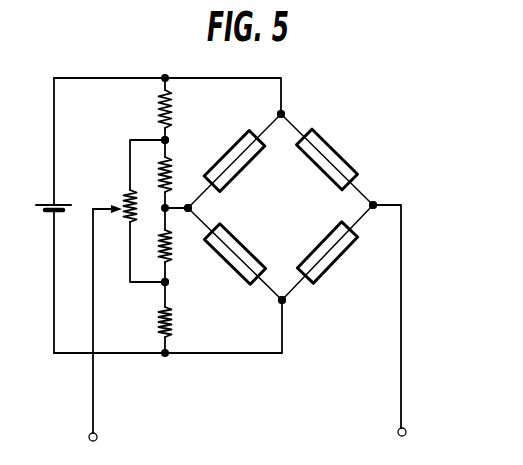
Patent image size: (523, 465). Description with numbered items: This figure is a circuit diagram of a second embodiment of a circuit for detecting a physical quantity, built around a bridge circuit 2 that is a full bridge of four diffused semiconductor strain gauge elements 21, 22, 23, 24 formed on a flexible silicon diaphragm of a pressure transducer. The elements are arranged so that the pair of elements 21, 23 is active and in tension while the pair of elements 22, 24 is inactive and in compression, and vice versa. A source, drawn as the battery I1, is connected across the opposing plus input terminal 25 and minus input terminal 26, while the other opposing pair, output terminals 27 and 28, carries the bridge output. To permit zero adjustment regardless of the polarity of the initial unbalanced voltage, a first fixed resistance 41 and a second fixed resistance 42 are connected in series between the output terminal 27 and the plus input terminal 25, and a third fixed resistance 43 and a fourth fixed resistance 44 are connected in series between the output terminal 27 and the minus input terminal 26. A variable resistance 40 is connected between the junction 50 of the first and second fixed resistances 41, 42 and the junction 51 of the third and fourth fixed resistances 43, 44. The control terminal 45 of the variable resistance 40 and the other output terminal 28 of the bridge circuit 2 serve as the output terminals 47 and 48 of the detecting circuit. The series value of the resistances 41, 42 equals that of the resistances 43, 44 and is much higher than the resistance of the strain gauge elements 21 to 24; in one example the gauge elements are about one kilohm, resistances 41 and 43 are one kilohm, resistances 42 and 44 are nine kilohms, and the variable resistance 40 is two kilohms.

The bridge circuit 2 is at (286, 219).
The strain gauge element 21 is at (242, 127).
The strain gauge element 22 is at (240, 273).
The strain gauge element 23 is at (336, 278).
The strain gauge element 24 is at (332, 164).
The plus input terminal 25 is at (285, 114).
The minus input terminal 26 is at (285, 303).
The output terminal 27 is at (195, 209).
The output terminal 28 is at (374, 205).
The variable resistance 40 is at (126, 193).
The first fixed resistance 41 is at (160, 163).
The second fixed resistance 42 is at (157, 101).
The third fixed resistance 43 is at (159, 247).
The fourth fixed resistance 44 is at (158, 312).
The control terminal 45 is at (97, 214).
The output terminal 47 is at (97, 435).
The output terminal 48 is at (398, 434).
The junction 50 is at (169, 140).
The junction 51 is at (170, 284).
The current source I1 is at (52, 194).